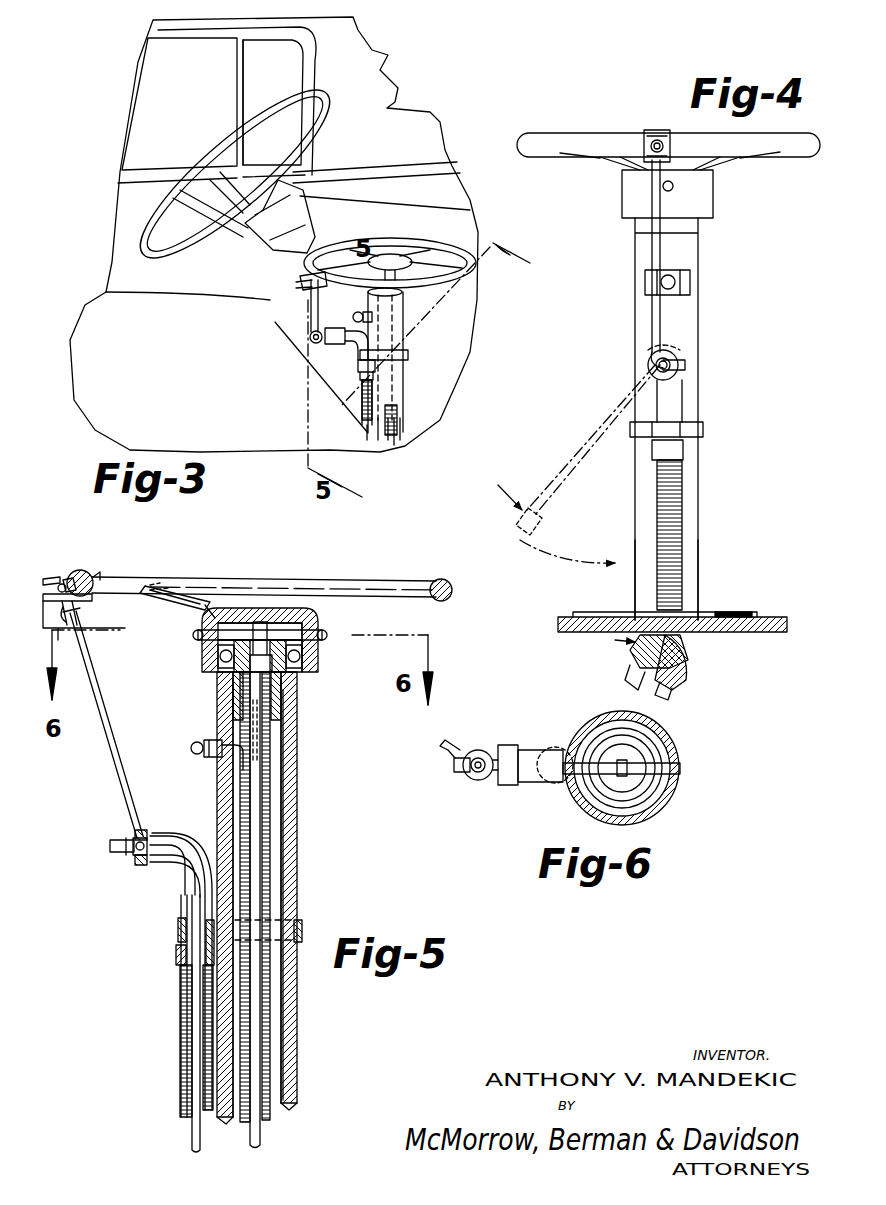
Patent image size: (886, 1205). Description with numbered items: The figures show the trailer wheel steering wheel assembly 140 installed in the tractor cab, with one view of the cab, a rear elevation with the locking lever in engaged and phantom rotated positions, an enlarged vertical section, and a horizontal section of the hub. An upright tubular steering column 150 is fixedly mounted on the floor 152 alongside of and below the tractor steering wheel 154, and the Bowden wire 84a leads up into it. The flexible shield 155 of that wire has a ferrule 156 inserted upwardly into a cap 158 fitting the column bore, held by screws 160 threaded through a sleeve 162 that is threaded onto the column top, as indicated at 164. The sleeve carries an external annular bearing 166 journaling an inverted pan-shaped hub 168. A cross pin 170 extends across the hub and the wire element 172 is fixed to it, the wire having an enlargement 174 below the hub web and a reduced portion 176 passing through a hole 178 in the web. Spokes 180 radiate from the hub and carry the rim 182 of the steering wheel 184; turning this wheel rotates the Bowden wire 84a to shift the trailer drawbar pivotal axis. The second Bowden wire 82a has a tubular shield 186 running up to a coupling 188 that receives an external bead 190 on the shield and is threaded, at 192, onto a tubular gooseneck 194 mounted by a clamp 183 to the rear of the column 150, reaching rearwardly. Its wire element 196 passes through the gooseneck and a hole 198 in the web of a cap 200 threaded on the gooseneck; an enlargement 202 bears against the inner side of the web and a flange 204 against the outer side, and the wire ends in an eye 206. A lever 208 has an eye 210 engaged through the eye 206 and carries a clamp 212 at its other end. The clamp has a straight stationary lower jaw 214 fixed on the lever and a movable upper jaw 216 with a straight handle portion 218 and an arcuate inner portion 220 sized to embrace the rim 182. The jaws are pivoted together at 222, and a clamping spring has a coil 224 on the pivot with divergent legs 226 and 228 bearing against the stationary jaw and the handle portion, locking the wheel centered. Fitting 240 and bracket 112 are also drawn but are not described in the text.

In FIG. 3, the Bowden wire 82a is at (362, 400).
In FIG. 4, the Bowden wire 82a is at (686, 503).
In FIG. 5, the Bowden wire 82a is at (180, 1048).
In FIG. 3, the Bowden wire 84a is at (403, 422).
In FIG. 5, the Bowden wire 84a is at (280, 1028).
In FIG. 5, the bracket 112 is at (67, 568).
In FIG. 3, the trailer wheel steering wheel assembly 140 is at (410, 336).
In FIG. 5, the trailer wheel steering wheel assembly 140 is at (310, 820).
In FIG. 3, the tubular steering column 150 is at (408, 393).
In FIG. 4, the tubular steering column 150 is at (700, 522).
In FIG. 5, the tubular steering column 150 is at (298, 870).
In FIG. 4, the floor 152 is at (782, 617).
In FIG. 3, the tractor steering wheel 154 is at (320, 126).
In FIG. 5, the flexible shield 155 is at (272, 778).
In FIG. 5, the ferrule 156 is at (217, 685).
In FIG. 5, the cap 158 is at (213, 670).
In FIG. 5, the screws 160 is at (300, 675).
In FIG. 5, the sleeve 162 is at (290, 693).
In FIG. 5, the threaded connection 164 is at (283, 708).
In FIG. 5, the external annular bearing 166 is at (318, 658).
In FIG. 5, the inverted pan-shaped hub 168 is at (320, 610).
In FIG. 6, the inverted pan-shaped hub 168 is at (665, 745).
In FIG. 5, the cross pin 170 is at (290, 628).
In FIG. 6, the cross pin 170 is at (660, 798).
In FIG. 5, the wire element 172 is at (255, 622).
In FIG. 6, the wire element 172 is at (612, 780).
In FIG. 5, the enlargement 174 is at (205, 612).
In FIG. 5, the reduced portion 176 is at (280, 628).
In FIG. 5, the hole 178 is at (262, 620).
In FIG. 5, the spokes 180 is at (195, 585).
In FIG. 5, the rim 182 is at (157, 570).
In FIG. 5, the clamp 183 is at (305, 918).
In FIG. 3, the steering wheel 184 is at (402, 238).
In FIG. 5, the steering wheel 184 is at (402, 575).
In FIG. 5, the tubular shield 186 is at (180, 1020).
In FIG. 5, the coupling 188 is at (176, 958).
In FIG. 5, the external bead 190 is at (176, 975).
In FIG. 5, the threaded connection 192 is at (178, 942).
In FIG. 3, the tubular gooseneck 194 is at (348, 348).
In FIG. 4, the tubular gooseneck 194 is at (683, 395).
In FIG. 5, the tubular gooseneck 194 is at (182, 905).
In FIG. 6, the tubular gooseneck 194 is at (530, 782).
In FIG. 5, the wire element 196 is at (170, 875).
In FIG. 5, the hole 198 is at (150, 862).
In FIG. 5, the cap 200 is at (140, 828).
In FIG. 5, the enlargement 202 is at (150, 845).
In FIG. 5, the flange 204 is at (130, 857).
In FIG. 4, the eye 206 is at (690, 365).
In FIG. 5, the eye 206 is at (108, 846).
In FIG. 6, the eye 206 is at (478, 782).
In FIG. 3, the lever 208 is at (306, 320).
In FIG. 4, the lever 208 is at (650, 253).
In FIG. 5, the lever 208 is at (112, 745).
In FIG. 6, the lever 208 is at (457, 740).
In FIG. 4, the eye 210 is at (648, 365).
In FIG. 5, the eye 210 is at (130, 845).
In FIG. 6, the eye 210 is at (462, 770).
In FIG. 3, the clamp 212 is at (298, 283).
In FIG. 4, the clamp 212 is at (660, 125).
In FIG. 5, the stationary lower jaw 214 is at (86, 607).
In FIG. 5, the movable upper jaw 216 is at (86, 572).
In FIG. 5, the handle portion 218 is at (72, 570).
In FIG. 5, the arcuate inner portion 220 is at (95, 569).
In FIG. 5, the pivot 222 is at (70, 583).
In FIG. 5, the coil 224 is at (80, 602).
In FIG. 5, the spring leg 226 is at (78, 641).
In FIG. 5, the spring leg 228 is at (48, 575).
In FIG. 3, the valve fitting 240 is at (375, 316).
In FIG. 4, the valve fitting 240 is at (692, 281).
In FIG. 5, the valve fitting 240 is at (190, 748).